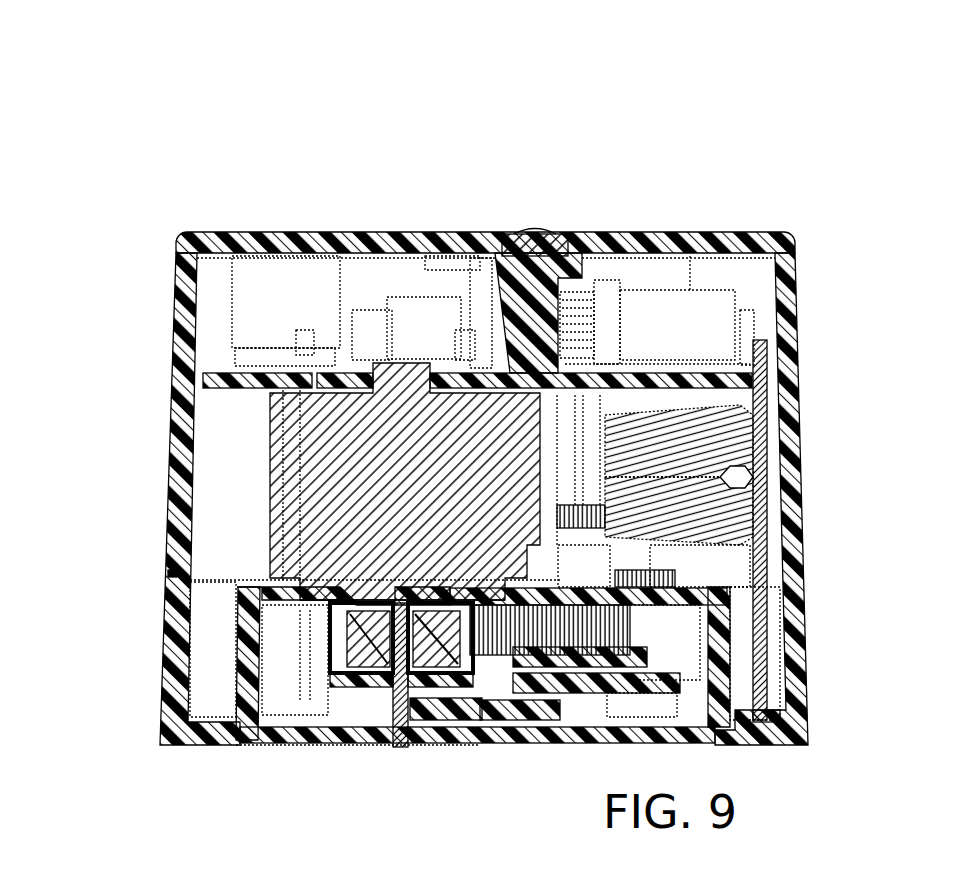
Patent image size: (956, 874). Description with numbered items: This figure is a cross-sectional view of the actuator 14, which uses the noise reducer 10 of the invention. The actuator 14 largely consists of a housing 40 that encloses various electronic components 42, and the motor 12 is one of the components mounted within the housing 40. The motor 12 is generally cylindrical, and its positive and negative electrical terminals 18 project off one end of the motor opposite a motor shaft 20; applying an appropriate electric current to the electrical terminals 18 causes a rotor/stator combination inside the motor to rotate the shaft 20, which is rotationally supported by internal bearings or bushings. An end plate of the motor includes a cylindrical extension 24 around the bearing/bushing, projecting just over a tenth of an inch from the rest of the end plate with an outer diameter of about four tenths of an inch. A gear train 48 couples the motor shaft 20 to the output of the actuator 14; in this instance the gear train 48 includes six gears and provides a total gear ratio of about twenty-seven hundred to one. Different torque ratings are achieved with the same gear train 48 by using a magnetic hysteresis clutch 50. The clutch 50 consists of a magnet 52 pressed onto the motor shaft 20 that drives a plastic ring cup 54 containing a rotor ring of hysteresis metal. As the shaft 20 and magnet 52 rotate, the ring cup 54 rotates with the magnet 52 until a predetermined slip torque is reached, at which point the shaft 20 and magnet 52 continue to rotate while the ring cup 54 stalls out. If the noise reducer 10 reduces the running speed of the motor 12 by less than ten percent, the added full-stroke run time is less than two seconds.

The noise reducer 10 is at (265, 580).
The motor 12 is at (383, 593).
The actuator 14 is at (616, 138).
The electrical terminals 18 is at (486, 333).
The motor shaft 20 is at (393, 653).
The cylindrical extension 24 is at (320, 452).
The housing 40 is at (793, 388).
The electronic components 42 is at (693, 312).
The gear train 48 is at (595, 690).
The magnetic hysteresis clutch 50 is at (323, 646).
The magnet 52 is at (363, 645).
The ring cup 54 is at (437, 687).